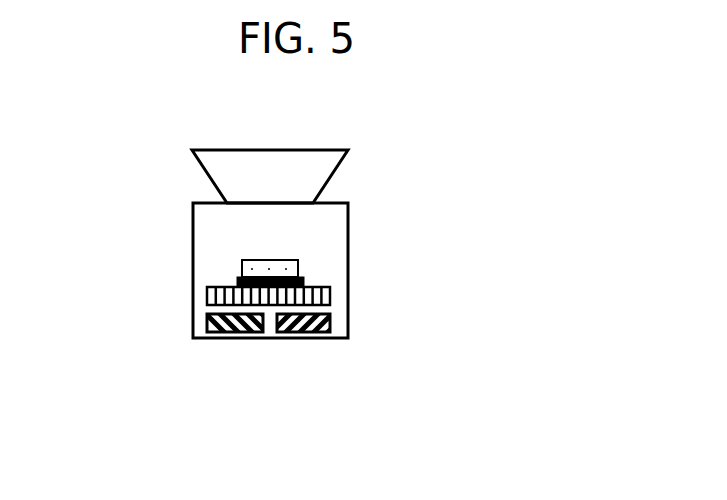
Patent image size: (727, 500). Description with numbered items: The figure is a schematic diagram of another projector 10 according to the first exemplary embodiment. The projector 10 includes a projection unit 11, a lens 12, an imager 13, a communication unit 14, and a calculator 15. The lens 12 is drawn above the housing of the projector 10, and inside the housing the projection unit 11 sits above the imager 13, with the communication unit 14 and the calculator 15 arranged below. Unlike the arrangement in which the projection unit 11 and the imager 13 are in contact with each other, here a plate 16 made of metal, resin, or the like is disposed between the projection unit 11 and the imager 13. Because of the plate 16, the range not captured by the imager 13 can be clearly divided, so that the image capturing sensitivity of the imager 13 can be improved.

The projector 10 is at (374, 340).
The projection unit 11 is at (298, 261).
The lens 12 is at (348, 183).
The imager 13 is at (330, 295).
The communication unit 14 is at (304, 333).
The calculator 15 is at (235, 333).
The plate 16 is at (237, 282).